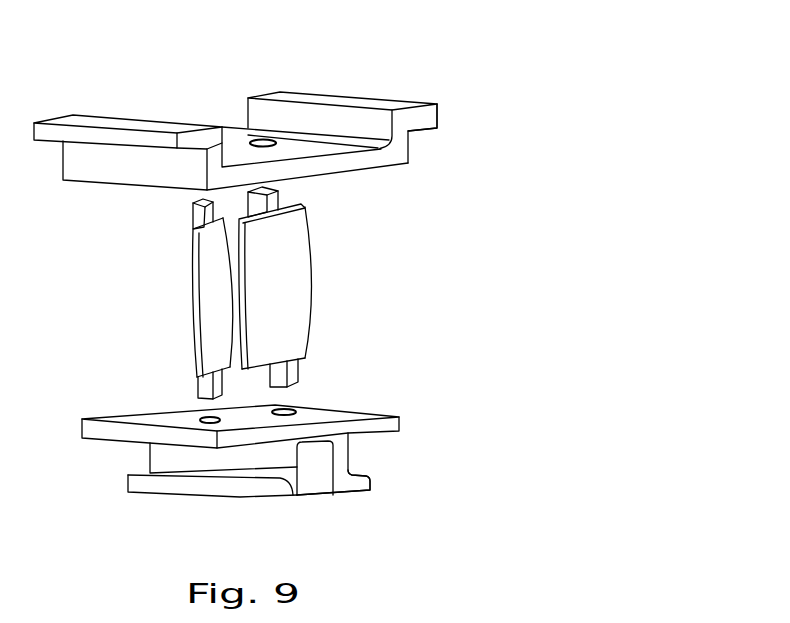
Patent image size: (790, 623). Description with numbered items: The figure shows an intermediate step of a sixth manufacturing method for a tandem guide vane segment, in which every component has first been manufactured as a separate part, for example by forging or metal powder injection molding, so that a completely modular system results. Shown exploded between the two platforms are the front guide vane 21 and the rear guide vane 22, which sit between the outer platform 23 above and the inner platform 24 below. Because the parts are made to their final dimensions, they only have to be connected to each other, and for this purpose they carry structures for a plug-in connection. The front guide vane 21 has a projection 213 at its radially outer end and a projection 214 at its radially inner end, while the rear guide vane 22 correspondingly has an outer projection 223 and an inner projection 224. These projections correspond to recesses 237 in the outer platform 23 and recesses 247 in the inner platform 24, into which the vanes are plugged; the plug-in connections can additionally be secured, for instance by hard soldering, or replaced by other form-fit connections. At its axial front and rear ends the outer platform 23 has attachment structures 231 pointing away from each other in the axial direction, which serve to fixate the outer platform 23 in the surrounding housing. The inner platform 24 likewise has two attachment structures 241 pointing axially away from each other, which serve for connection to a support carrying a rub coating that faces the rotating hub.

The front guide vane 21 is at (195, 290).
The rear guide vane 22 is at (315, 268).
The outer platform 23 is at (195, 122).
The inner platform 24 is at (385, 415).
The projection 213 is at (192, 210).
The projection 214 is at (198, 378).
The projection 223 is at (280, 190).
The projection 224 is at (300, 365).
The attachment structure 231 is at (408, 101).
The recess 237 is at (258, 143).
The attachment structure 241 is at (357, 497).
The recess 247 is at (200, 419).